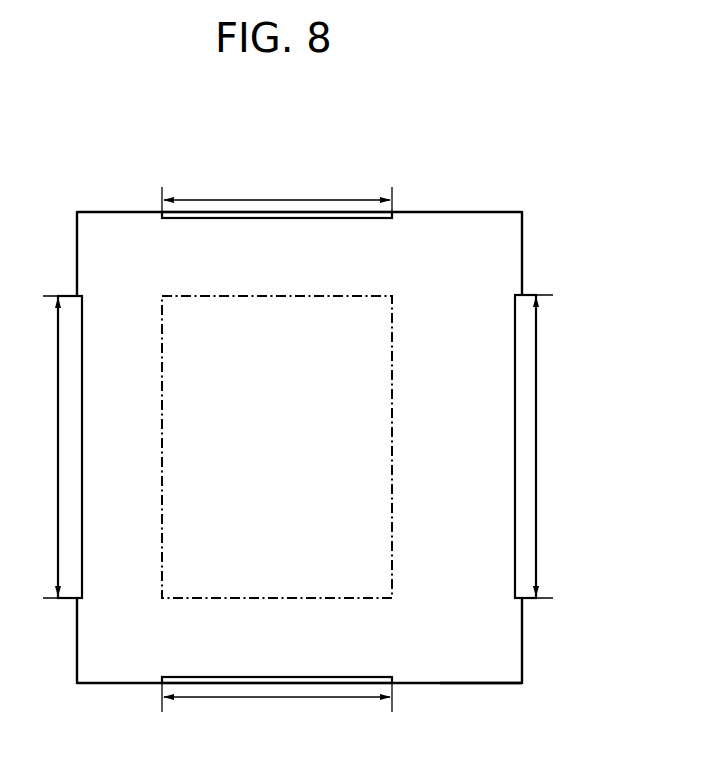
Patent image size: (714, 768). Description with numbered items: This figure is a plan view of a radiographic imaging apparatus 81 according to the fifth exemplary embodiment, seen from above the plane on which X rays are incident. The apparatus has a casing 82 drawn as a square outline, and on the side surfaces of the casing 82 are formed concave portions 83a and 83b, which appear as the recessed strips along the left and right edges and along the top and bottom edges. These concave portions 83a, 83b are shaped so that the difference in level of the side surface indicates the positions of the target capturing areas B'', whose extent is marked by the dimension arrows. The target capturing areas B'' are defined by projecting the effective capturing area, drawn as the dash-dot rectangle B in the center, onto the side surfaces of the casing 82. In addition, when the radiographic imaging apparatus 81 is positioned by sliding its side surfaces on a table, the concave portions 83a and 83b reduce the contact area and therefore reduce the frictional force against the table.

The radiographic imaging apparatus 81 is at (562, 176).
The casing 82 is at (497, 670).
The concave portions 83a is at (82, 365).
The concave portions 83b is at (200, 217).
The central region B is at (213, 408).
The target capturing areas B'' is at (299, 450).